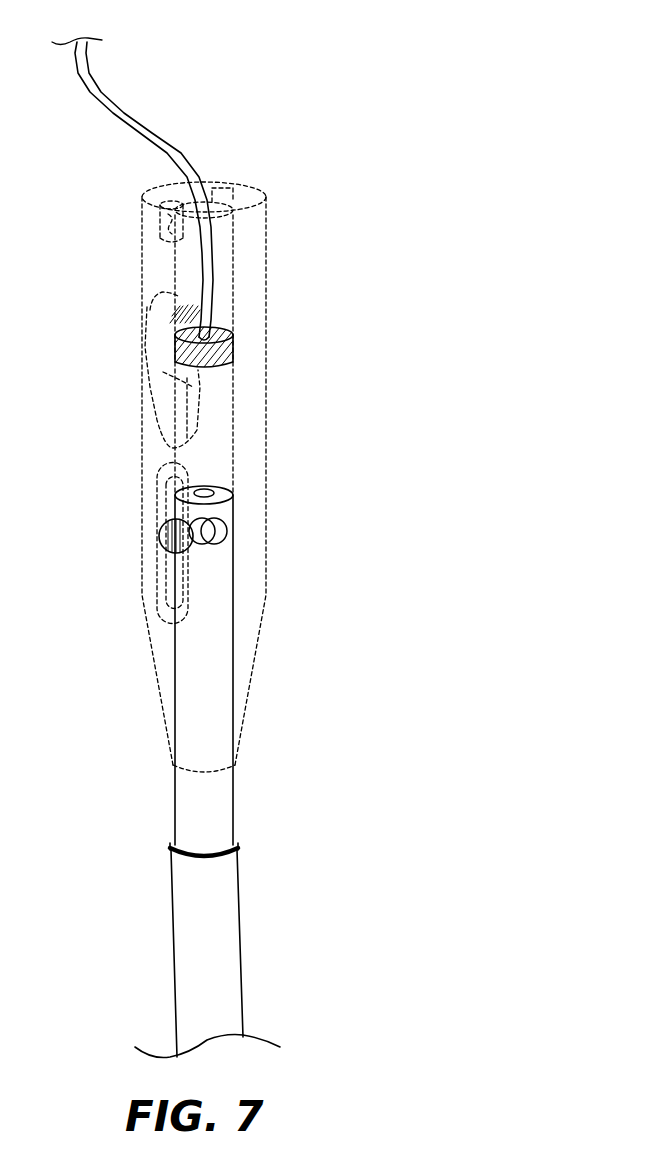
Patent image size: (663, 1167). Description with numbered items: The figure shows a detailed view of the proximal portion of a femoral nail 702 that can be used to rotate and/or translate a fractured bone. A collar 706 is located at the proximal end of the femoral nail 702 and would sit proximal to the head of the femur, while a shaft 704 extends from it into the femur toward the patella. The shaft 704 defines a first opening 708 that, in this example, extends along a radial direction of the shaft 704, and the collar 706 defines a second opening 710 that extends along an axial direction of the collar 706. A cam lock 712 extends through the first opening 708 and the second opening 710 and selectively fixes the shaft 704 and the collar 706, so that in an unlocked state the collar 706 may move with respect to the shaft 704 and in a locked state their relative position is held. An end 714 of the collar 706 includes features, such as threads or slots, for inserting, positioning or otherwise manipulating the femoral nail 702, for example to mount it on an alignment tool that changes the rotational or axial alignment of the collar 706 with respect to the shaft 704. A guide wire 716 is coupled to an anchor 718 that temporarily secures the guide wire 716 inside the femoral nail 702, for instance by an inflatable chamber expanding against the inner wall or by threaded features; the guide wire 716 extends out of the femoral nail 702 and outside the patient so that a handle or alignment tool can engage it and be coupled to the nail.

The femoral nail 702 is at (320, 66).
The shaft 704 is at (235, 803).
The collar 706 is at (268, 253).
The first opening 708 is at (228, 522).
The second opening 710 is at (156, 482).
The cam lock 712 is at (160, 535).
The end of the collar 714 is at (222, 188).
The guide wire 716 is at (151, 135).
The anchor 718 is at (234, 347).